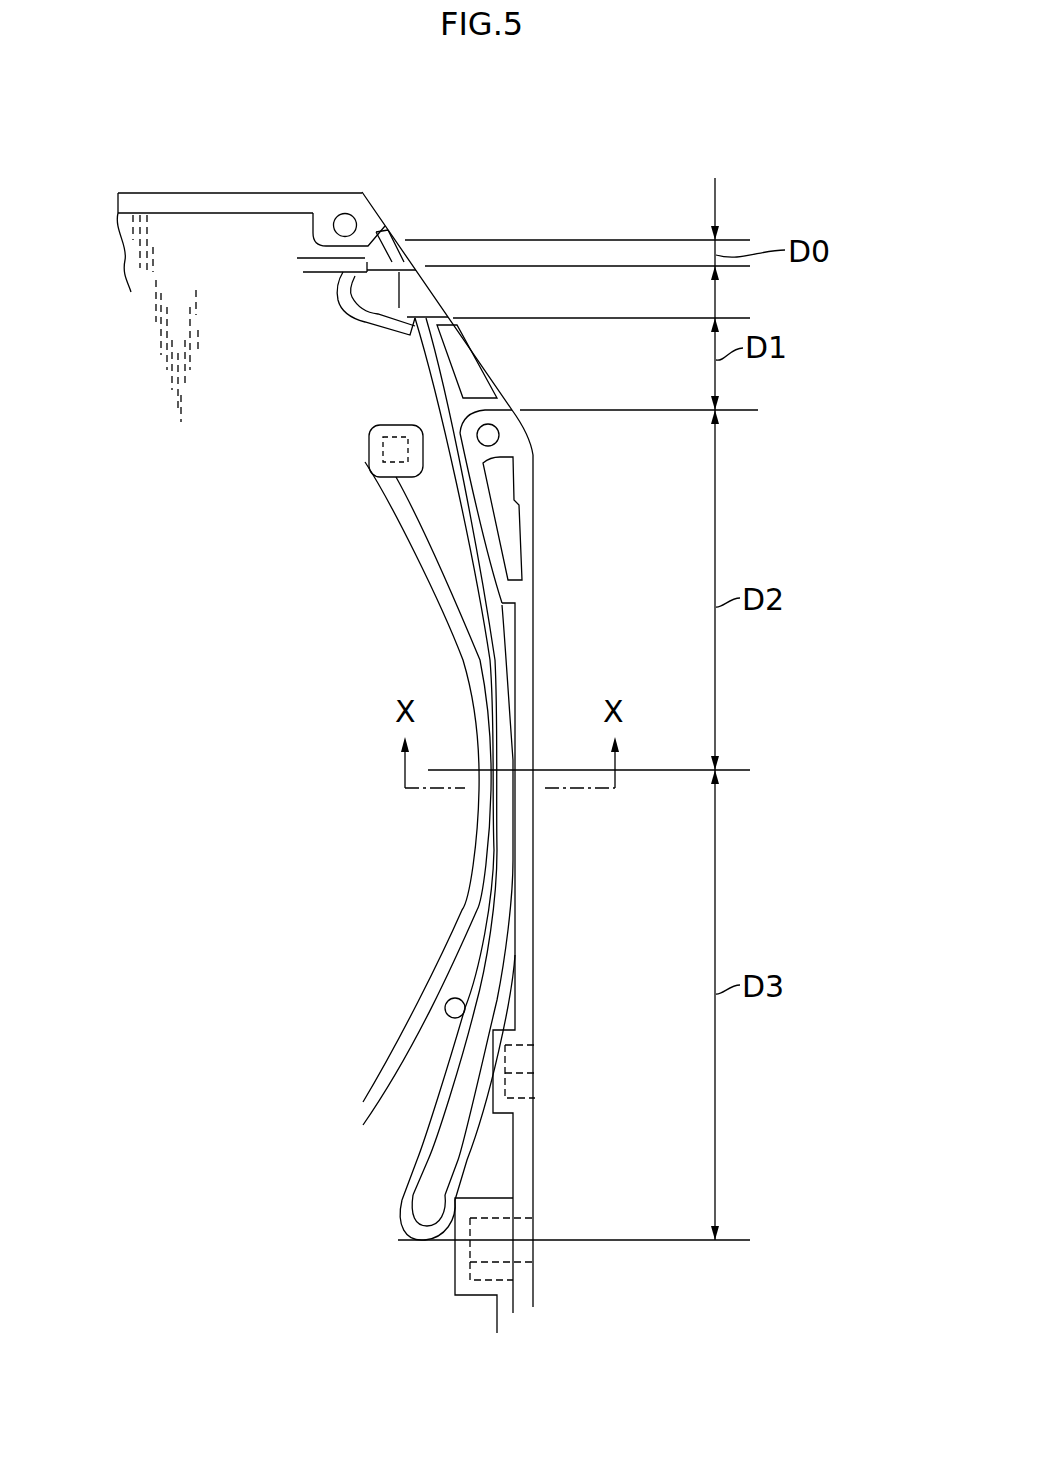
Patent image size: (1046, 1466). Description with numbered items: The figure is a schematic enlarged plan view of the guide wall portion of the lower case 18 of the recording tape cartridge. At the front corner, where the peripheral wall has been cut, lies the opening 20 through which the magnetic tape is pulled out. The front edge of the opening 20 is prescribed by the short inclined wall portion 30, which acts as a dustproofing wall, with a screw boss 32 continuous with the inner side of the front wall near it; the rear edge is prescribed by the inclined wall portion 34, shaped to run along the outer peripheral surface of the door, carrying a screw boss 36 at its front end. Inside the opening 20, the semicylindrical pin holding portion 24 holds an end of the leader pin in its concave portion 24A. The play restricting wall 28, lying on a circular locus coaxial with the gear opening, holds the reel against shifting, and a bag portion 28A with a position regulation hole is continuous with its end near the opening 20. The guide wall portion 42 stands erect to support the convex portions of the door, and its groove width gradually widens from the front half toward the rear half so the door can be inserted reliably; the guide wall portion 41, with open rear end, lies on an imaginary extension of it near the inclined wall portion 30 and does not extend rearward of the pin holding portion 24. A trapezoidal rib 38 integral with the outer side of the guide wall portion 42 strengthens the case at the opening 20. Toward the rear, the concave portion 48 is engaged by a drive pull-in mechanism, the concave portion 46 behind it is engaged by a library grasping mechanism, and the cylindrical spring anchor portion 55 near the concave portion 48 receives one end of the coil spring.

The lower case 18 is at (560, 220).
The opening 20 is at (452, 296).
The pin holding portion 24 is at (352, 310).
The concave portion 24A is at (338, 289).
The play restricting wall 28 is at (408, 523).
The bag portion 28A is at (373, 433).
The inclined wall portion 30 is at (383, 228).
The screw boss 32 is at (346, 214).
The inclined wall portion 34 is at (493, 520).
The screw boss 36 is at (500, 436).
The rib 38 is at (480, 361).
The guide wall portion 41 is at (413, 252).
The guide wall portion 42 is at (398, 1217).
The concave portion 46 is at (535, 1262).
The concave portion 48 is at (535, 1073).
The spring anchor portion 55 is at (446, 1006).